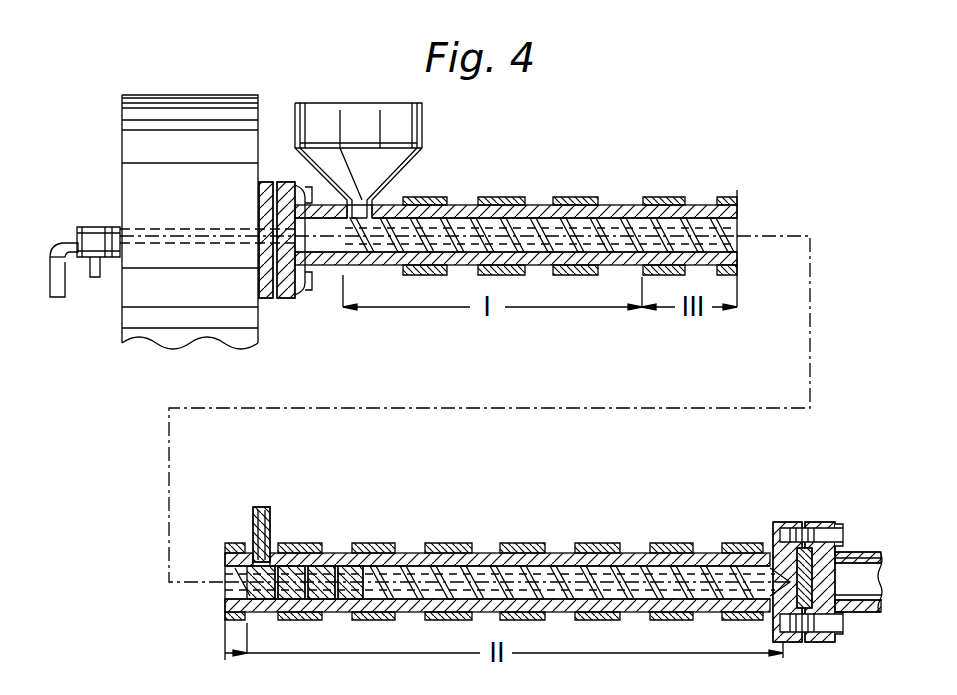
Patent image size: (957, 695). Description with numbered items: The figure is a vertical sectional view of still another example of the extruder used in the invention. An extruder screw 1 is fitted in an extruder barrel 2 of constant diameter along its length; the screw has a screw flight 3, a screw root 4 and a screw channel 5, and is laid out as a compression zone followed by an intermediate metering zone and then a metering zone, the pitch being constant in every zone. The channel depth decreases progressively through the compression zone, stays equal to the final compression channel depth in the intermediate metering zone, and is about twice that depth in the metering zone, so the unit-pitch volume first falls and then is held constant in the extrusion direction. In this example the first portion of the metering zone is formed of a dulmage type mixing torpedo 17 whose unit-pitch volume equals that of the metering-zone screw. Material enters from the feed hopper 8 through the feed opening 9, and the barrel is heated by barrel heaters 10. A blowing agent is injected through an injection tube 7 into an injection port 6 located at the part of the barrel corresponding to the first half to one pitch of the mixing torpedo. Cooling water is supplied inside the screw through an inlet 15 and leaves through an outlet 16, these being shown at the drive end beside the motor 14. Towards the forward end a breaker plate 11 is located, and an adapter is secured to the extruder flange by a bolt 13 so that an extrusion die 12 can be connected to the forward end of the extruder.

The extruder screw 1 is at (541, 232).
The extruder barrel 2 is at (436, 210).
The screw flight 3 is at (480, 204).
The screw root 4 is at (644, 214).
The screw channel 5 is at (594, 206).
The injection port 6 is at (272, 553).
The injection tube 7 is at (270, 523).
The feed hopper 8 is at (422, 120).
The feed opening 9 is at (366, 210).
The barrel heaters 10 is at (518, 214).
The breaker plate 11 is at (826, 558).
The outlet nozzle 12 is at (868, 552).
The bolt 13 is at (816, 534).
The drive motor 14 is at (247, 323).
The cooling water inlet 15 is at (56, 298).
The cooling water outlet 16 is at (96, 277).
The dulmage type mixing torpedo 17 is at (312, 567).